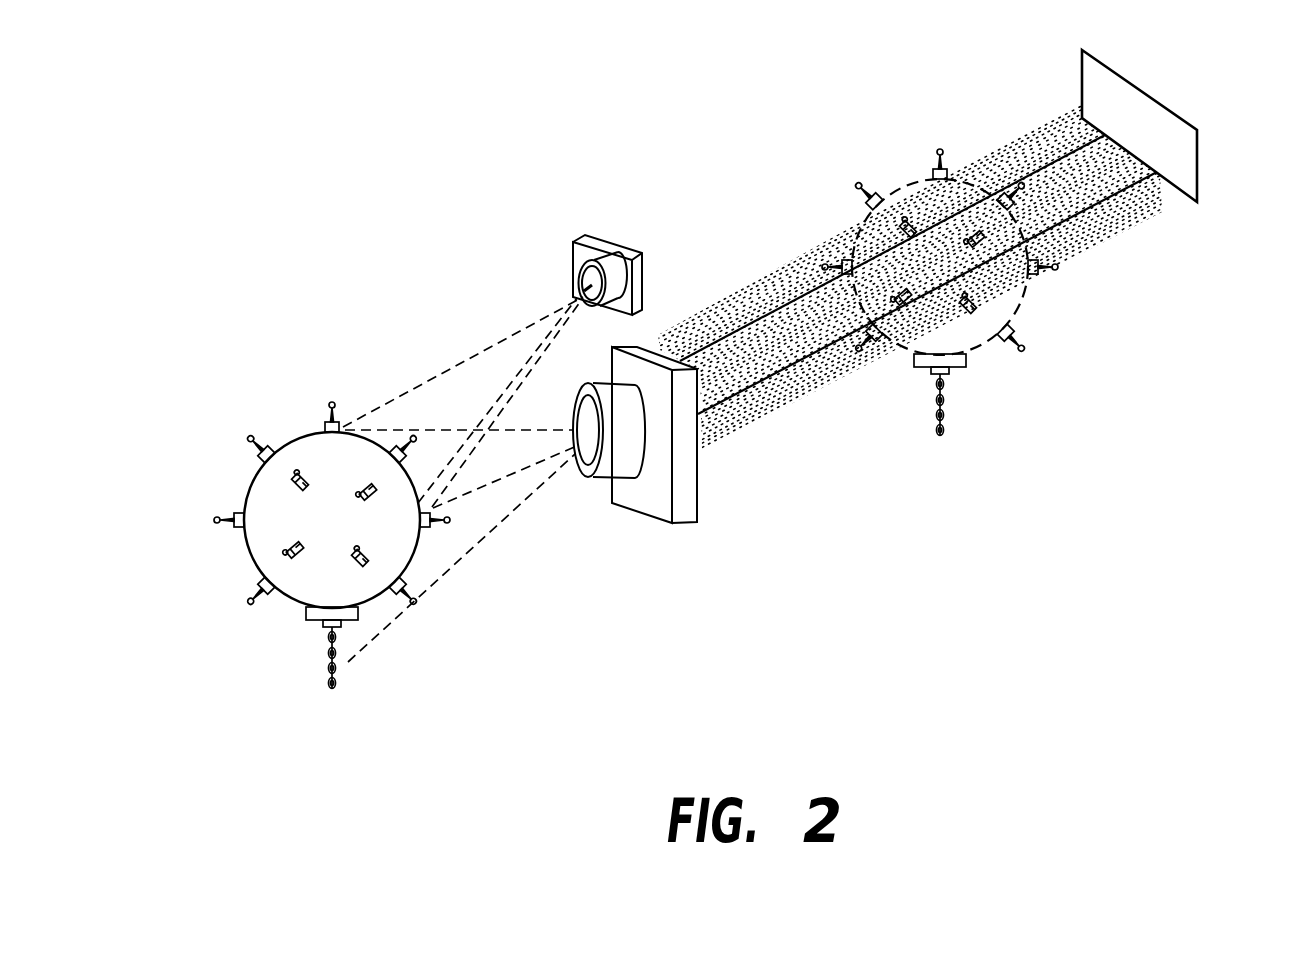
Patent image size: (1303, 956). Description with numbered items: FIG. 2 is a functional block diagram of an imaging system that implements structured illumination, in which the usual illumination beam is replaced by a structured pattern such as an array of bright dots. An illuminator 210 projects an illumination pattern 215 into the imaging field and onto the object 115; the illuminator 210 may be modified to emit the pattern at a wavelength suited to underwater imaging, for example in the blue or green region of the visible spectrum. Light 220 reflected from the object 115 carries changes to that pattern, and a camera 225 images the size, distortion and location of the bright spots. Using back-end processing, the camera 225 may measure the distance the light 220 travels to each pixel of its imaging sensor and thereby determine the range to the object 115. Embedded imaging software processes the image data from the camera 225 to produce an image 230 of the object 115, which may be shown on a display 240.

The object 115 is at (253, 472).
The illuminator 210 is at (573, 242).
The illumination pattern 215 is at (467, 357).
The light 220 is at (472, 552).
The camera 225 is at (690, 523).
The image 230 is at (1017, 312).
The display 240 is at (1133, 83).